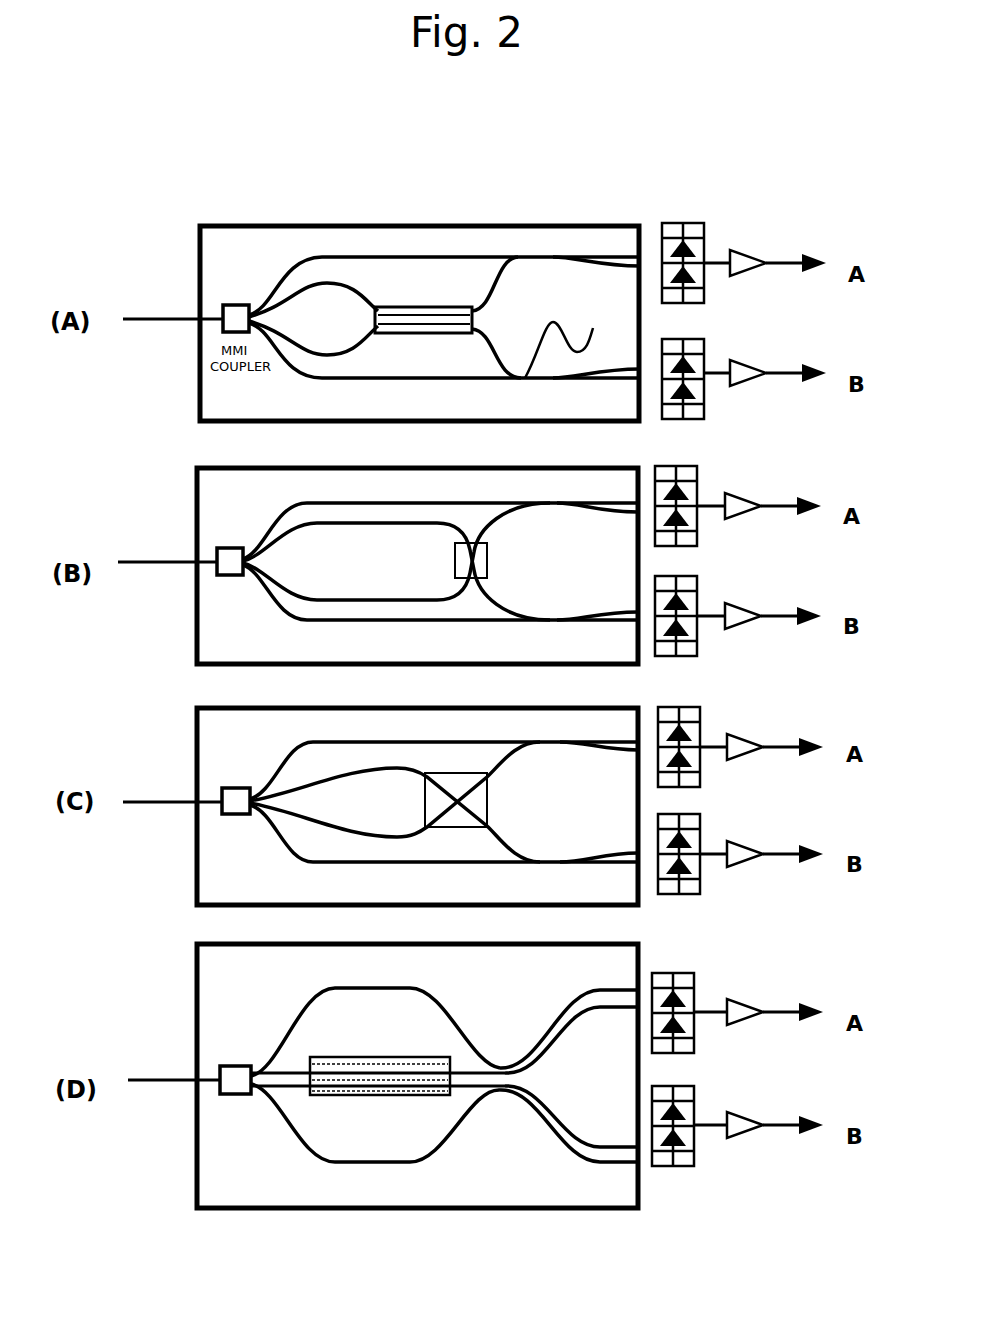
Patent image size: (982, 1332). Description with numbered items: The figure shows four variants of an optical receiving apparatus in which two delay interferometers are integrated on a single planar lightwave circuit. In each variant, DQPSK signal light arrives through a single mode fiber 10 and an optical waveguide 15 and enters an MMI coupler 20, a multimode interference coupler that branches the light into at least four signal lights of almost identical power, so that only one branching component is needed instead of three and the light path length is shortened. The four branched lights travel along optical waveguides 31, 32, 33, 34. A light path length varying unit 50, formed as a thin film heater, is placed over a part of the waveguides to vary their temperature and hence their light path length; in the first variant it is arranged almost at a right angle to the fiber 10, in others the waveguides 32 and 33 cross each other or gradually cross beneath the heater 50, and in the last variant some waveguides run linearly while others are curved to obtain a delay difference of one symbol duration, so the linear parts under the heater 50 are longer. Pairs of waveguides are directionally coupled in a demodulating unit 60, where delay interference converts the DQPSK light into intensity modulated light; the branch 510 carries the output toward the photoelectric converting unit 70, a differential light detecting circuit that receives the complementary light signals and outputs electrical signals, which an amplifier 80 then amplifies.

The single mode fiber 10 is at (167, 318).
The optical waveguide 15 is at (213, 317).
The MMI coupler 20 is at (237, 304).
The optical waveguide 31 is at (293, 272).
The optical waveguide 32 is at (323, 283).
The optical waveguide 33 is at (350, 342).
The optical waveguide 34 is at (367, 377).
The light path length varying unit 50 is at (450, 303).
The output branch waveguide 510 is at (543, 226).
The demodulating unit 60 is at (593, 328).
The photoelectric converting unit 70 is at (705, 238).
The amplifier 80 is at (765, 262).